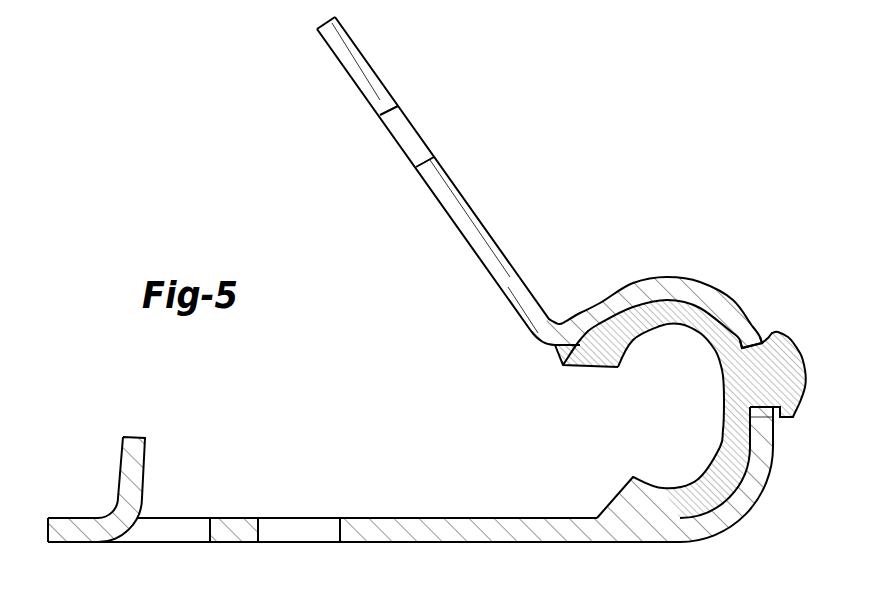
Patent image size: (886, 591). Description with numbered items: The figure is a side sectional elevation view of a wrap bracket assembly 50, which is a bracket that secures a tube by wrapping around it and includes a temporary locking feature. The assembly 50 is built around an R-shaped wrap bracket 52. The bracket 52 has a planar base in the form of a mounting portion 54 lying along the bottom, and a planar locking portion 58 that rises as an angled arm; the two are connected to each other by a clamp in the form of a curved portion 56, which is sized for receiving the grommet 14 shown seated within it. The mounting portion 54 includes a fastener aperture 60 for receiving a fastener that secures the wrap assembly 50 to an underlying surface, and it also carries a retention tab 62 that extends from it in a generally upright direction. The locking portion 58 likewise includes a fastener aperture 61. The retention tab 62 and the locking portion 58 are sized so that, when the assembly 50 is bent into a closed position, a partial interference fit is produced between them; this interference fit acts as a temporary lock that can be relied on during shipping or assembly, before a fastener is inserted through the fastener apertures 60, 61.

The wrap bracket assembly 50 is at (705, 225).
The wrap bracket 52 is at (487, 232).
The mounting portion 54 is at (408, 530).
The curved portion 56 is at (738, 307).
The locking portion 58 is at (331, 50).
The fastener aperture 60 is at (258, 530).
The fastener aperture 61 is at (397, 113).
The retention tab 62 is at (118, 482).
The grommet 14 is at (803, 353).